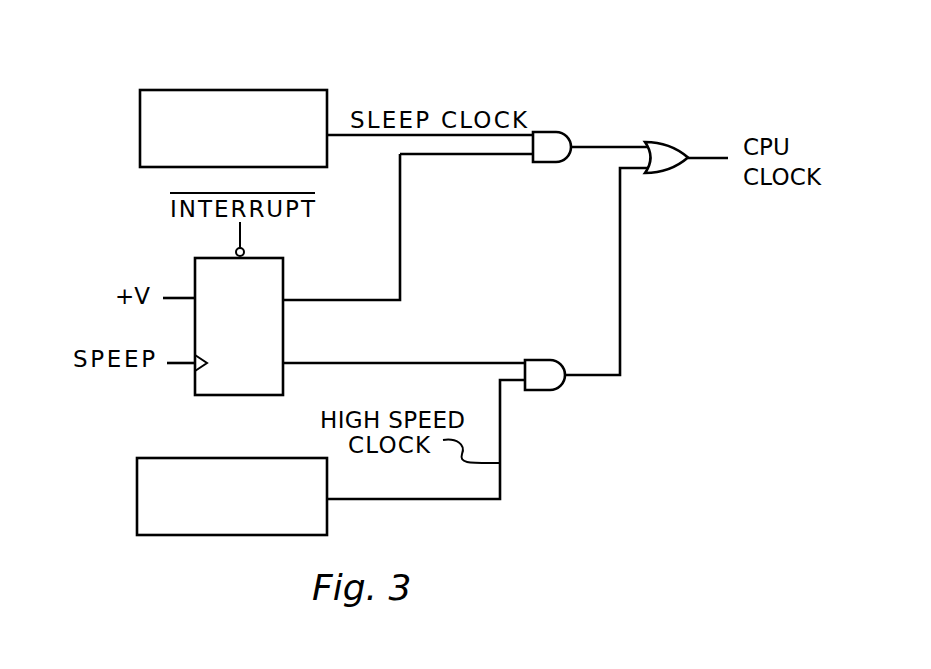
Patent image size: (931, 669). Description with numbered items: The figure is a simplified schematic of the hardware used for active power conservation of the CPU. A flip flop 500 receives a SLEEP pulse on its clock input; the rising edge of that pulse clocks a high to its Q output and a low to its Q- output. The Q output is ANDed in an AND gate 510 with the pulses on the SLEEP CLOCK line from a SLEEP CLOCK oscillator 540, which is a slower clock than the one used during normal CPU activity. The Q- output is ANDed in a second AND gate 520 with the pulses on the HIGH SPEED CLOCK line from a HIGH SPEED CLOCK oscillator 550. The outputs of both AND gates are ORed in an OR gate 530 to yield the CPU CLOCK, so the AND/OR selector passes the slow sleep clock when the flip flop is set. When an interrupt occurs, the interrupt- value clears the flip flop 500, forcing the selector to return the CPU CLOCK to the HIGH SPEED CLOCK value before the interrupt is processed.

The flip flop 500 is at (178, 273).
The AND gate 510 is at (578, 131).
The AND gate 520 is at (549, 396).
The OR gate 530 is at (716, 124).
The SLEEP CLOCK oscillator 540 is at (211, 79).
The HIGH SPEED CLOCK oscillator 550 is at (124, 477).